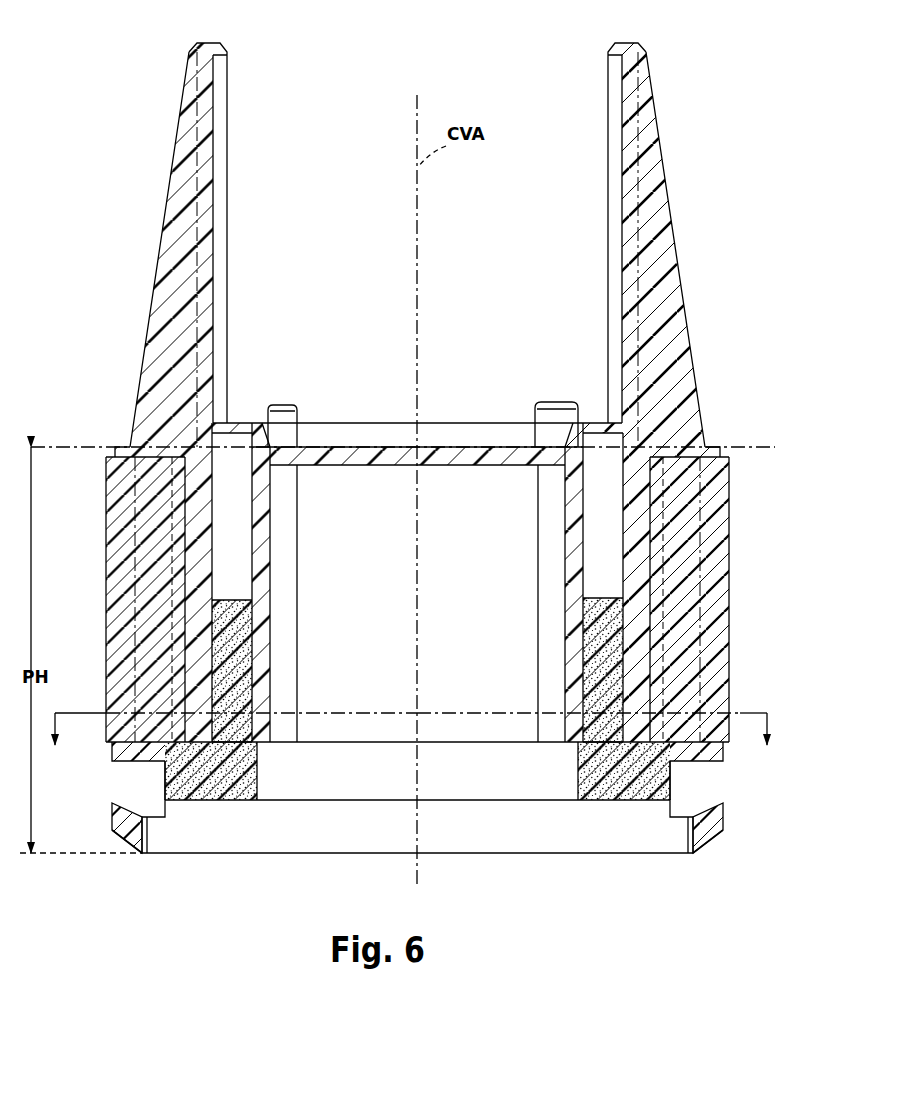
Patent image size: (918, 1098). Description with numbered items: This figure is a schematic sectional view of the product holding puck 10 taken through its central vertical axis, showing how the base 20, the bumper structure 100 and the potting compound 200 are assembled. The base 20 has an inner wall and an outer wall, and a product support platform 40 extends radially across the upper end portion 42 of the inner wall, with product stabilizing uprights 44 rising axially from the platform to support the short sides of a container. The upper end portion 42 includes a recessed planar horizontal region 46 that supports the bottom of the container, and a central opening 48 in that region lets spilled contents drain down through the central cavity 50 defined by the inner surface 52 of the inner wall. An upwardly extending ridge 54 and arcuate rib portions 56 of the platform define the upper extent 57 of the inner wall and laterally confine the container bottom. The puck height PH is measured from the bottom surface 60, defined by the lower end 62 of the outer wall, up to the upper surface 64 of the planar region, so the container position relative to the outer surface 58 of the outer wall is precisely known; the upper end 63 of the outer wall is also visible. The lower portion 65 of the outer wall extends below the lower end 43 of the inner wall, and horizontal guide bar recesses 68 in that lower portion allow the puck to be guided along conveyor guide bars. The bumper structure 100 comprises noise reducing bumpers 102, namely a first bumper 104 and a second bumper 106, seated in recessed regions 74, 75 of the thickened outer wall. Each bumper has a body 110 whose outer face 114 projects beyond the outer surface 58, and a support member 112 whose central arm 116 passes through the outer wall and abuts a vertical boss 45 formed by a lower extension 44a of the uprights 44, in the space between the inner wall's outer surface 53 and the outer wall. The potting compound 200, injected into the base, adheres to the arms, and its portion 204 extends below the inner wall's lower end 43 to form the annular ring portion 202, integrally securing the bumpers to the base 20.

The product holding puck 10 is at (703, 101).
The base 20 is at (708, 395).
The product support platform 40 is at (357, 442).
The upper end portion 42 is at (262, 439).
The lower surface or end of inner wall 43 is at (262, 752).
The product stabilizing uprights 44 is at (149, 255).
The lower extension 44a is at (224, 561).
The vertical boss 45 is at (222, 623).
The recessed planar horizontal region 46 is at (333, 466).
The central opening 48 is at (368, 461).
The central cavity 50 is at (388, 629).
The inner surface of inner wall 52 is at (281, 534).
The outer surface of inner wall 53 is at (108, 697).
The upwardly axially extending ridge 54 is at (327, 432).
The axially extending arcuate rib portions 56 is at (554, 412).
The upper extent of inner wall 57 is at (490, 440).
The outer surface of outer wall 58 is at (112, 753).
The bottom surface 60 is at (430, 855).
The lower or bottom end of outer wall 62 is at (116, 832).
The upper surface or end of outer wall 63 is at (128, 442).
The upper surface of planar horizontal portion 64 is at (501, 446).
The lower portion of outer wall 65 is at (140, 803).
The horizontal guide bar recesses 68 is at (120, 779).
The first recessed region 74 is at (722, 702).
The second recessed region 75 is at (118, 703).
The bumper structure 100 is at (736, 563).
The noise reducing bumpers 102 is at (733, 533).
The first noise reducing bumper 104 is at (712, 507).
The second noise reducing bumper 106 is at (146, 561).
The body 110 is at (104, 622).
The support member 112 is at (180, 511).
The outer face 114 is at (104, 665).
The central arm 116 is at (155, 525).
The potting compound 200 is at (226, 801).
The potting material portion 202 is at (248, 703).
The potting compound portion 204 is at (372, 786).